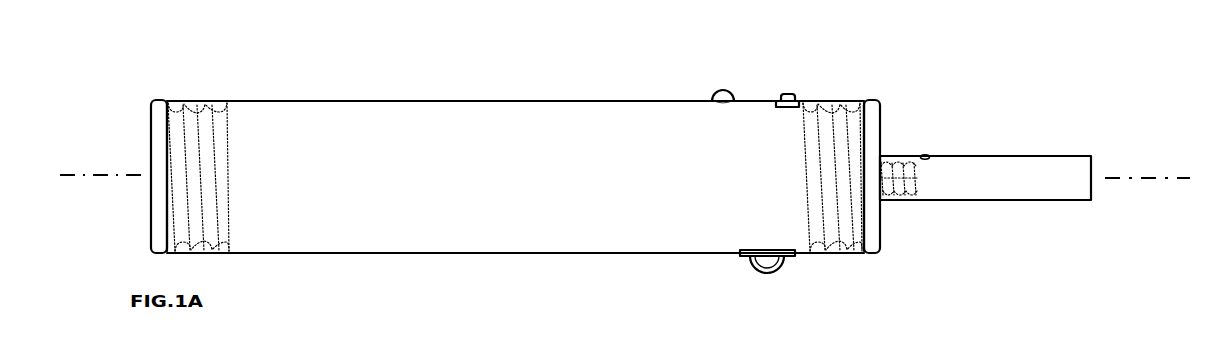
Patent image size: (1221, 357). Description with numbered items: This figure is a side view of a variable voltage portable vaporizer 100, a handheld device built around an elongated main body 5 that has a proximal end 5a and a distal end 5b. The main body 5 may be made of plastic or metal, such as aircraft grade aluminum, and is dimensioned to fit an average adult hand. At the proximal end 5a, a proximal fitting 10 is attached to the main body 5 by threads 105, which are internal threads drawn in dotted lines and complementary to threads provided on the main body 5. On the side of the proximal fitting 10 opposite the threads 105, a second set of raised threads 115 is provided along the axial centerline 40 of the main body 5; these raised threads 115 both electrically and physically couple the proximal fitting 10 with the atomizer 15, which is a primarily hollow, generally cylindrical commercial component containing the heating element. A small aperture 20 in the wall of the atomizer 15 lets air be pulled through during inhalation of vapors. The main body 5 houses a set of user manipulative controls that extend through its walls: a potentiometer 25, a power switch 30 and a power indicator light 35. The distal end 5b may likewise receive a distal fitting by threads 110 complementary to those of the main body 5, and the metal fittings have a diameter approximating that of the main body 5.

The variable voltage portable vaporizer 100 is at (108, 69).
The main body 5 is at (492, 188).
The proximal end 5a is at (866, 253).
The distal end 5b is at (163, 253).
The proximal fitting 10 is at (873, 101).
The atomizer 15 is at (162, 101).
The small aperture 20 is at (925, 155).
The potentiometer 25 is at (767, 270).
The power switch 30 is at (790, 94).
The power indicator light 35 is at (723, 90).
The axial centerline 40 is at (72, 175).
The threads 105 is at (830, 115).
The threads 110 is at (197, 115).
The second set of raised threads 115 is at (893, 193).